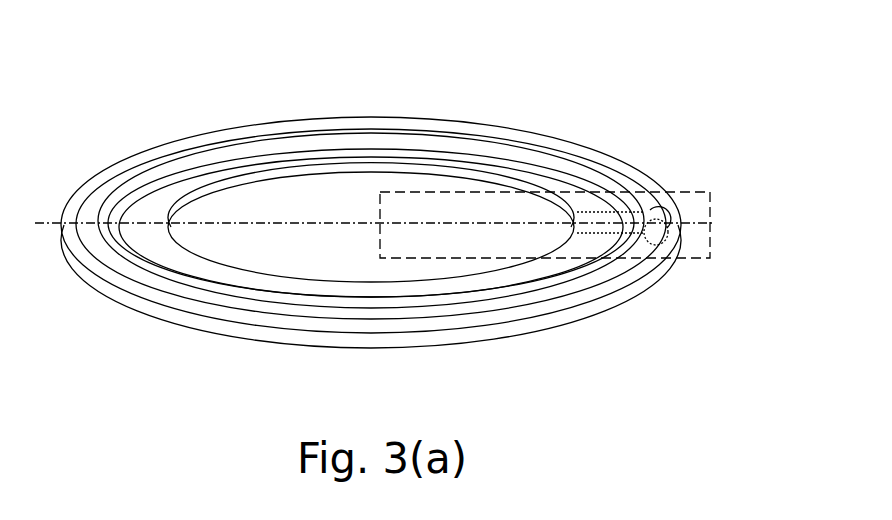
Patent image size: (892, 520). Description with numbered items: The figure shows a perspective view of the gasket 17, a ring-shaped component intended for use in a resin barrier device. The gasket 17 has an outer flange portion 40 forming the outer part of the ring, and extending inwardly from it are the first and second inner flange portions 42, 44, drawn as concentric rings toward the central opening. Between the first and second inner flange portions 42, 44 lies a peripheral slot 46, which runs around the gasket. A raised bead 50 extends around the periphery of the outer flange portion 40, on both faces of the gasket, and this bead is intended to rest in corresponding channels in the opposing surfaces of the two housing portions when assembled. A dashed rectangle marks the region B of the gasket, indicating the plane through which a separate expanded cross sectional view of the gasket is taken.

The gasket 17 is at (421, 211).
The outer flange portion 40 is at (160, 311).
The raised bead 50 is at (127, 163).
The second inner flange portion 44 is at (248, 157).
The peripheral slot 46 is at (380, 155).
The first inner flange portion 42 is at (331, 172).
The region B is at (711, 225).